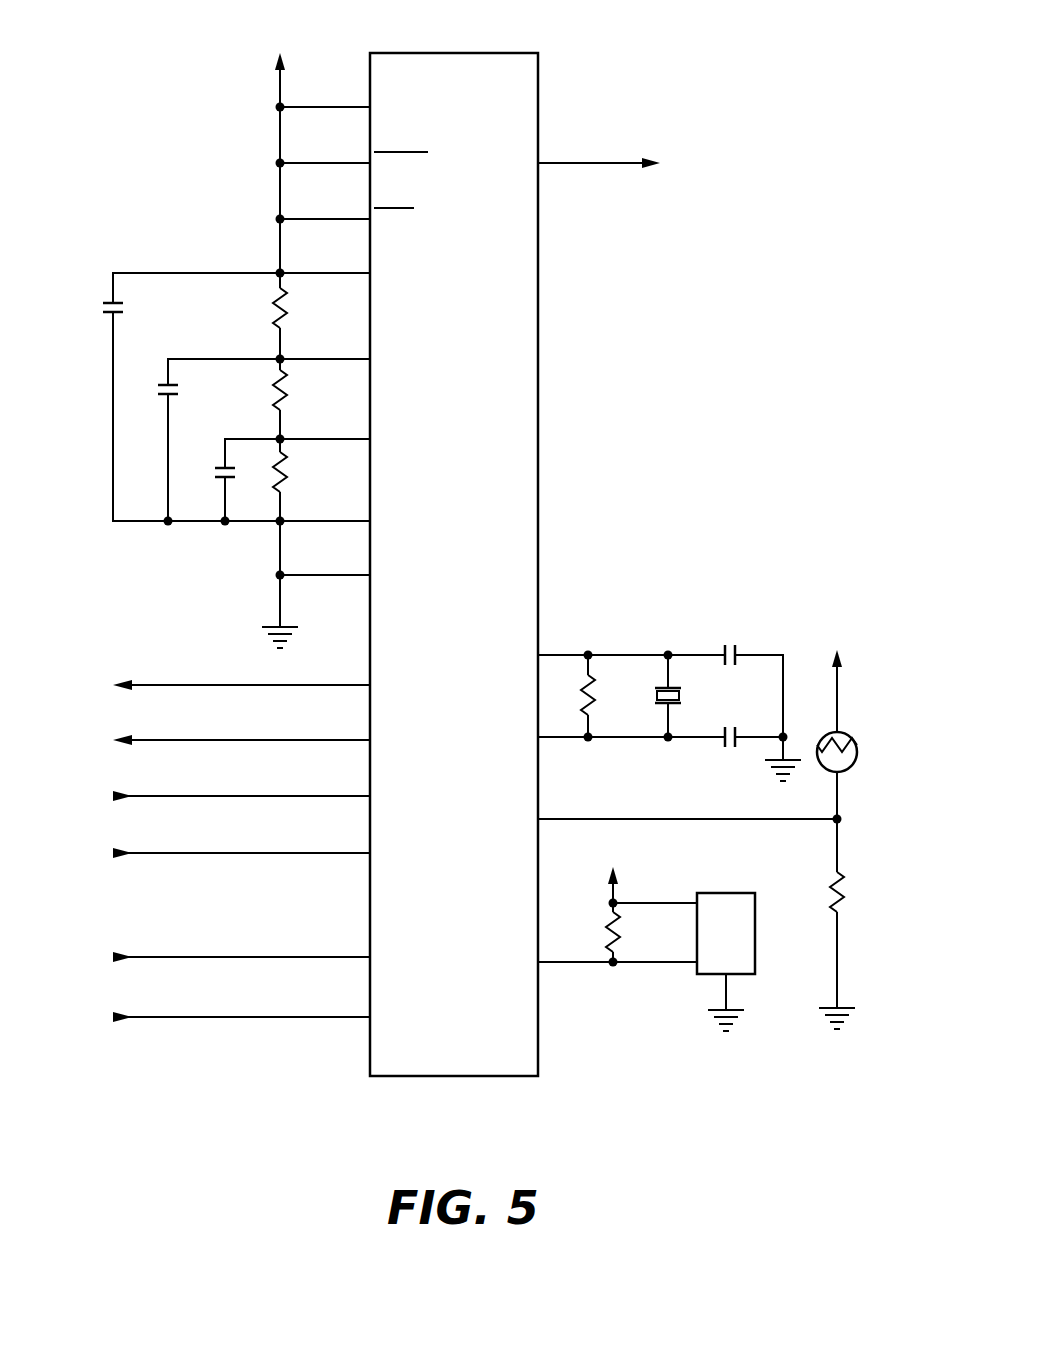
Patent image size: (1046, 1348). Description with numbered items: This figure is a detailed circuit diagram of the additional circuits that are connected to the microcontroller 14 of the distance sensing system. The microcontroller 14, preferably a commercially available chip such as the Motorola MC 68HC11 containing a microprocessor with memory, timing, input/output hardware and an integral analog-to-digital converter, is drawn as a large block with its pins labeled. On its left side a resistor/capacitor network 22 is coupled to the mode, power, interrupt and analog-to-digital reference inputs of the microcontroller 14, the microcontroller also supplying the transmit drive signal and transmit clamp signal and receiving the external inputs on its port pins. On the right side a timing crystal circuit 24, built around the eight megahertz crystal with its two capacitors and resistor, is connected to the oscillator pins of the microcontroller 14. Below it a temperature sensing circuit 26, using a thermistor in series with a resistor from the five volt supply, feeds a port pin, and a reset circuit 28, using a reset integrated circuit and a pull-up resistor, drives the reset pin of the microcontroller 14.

The microcontroller 14 is at (523, 53).
The resistor/capacitor network 22 is at (96, 462).
The timing crystal circuit 24 is at (733, 583).
The temperature sensing circuit 26 is at (878, 932).
The reset circuit 28 is at (773, 1015).